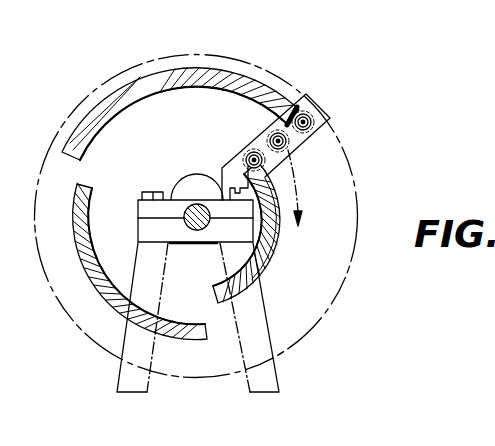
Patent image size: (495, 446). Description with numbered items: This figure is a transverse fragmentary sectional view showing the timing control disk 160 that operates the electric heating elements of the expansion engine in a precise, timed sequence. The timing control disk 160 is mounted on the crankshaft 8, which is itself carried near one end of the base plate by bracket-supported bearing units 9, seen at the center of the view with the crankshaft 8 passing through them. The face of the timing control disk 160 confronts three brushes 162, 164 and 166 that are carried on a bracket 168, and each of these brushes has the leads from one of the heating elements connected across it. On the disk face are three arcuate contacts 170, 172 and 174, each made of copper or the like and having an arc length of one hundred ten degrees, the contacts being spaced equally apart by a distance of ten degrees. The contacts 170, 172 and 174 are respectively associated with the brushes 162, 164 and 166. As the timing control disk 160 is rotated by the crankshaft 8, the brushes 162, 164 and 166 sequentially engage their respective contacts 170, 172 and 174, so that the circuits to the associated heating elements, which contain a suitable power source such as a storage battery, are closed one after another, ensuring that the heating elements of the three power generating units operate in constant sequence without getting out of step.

The crankshaft 8 is at (192, 230).
The bracket-supported bearing units 9 is at (179, 193).
The timing control disk 160 is at (356, 192).
The brush 162 is at (314, 120).
The brush 164 is at (289, 148).
The brush 166 is at (244, 153).
The bracket 168 is at (304, 102).
The arcuate contact 170 is at (155, 88).
The arcuate contact 172 is at (92, 276).
The arcuate contact 174 is at (270, 244).